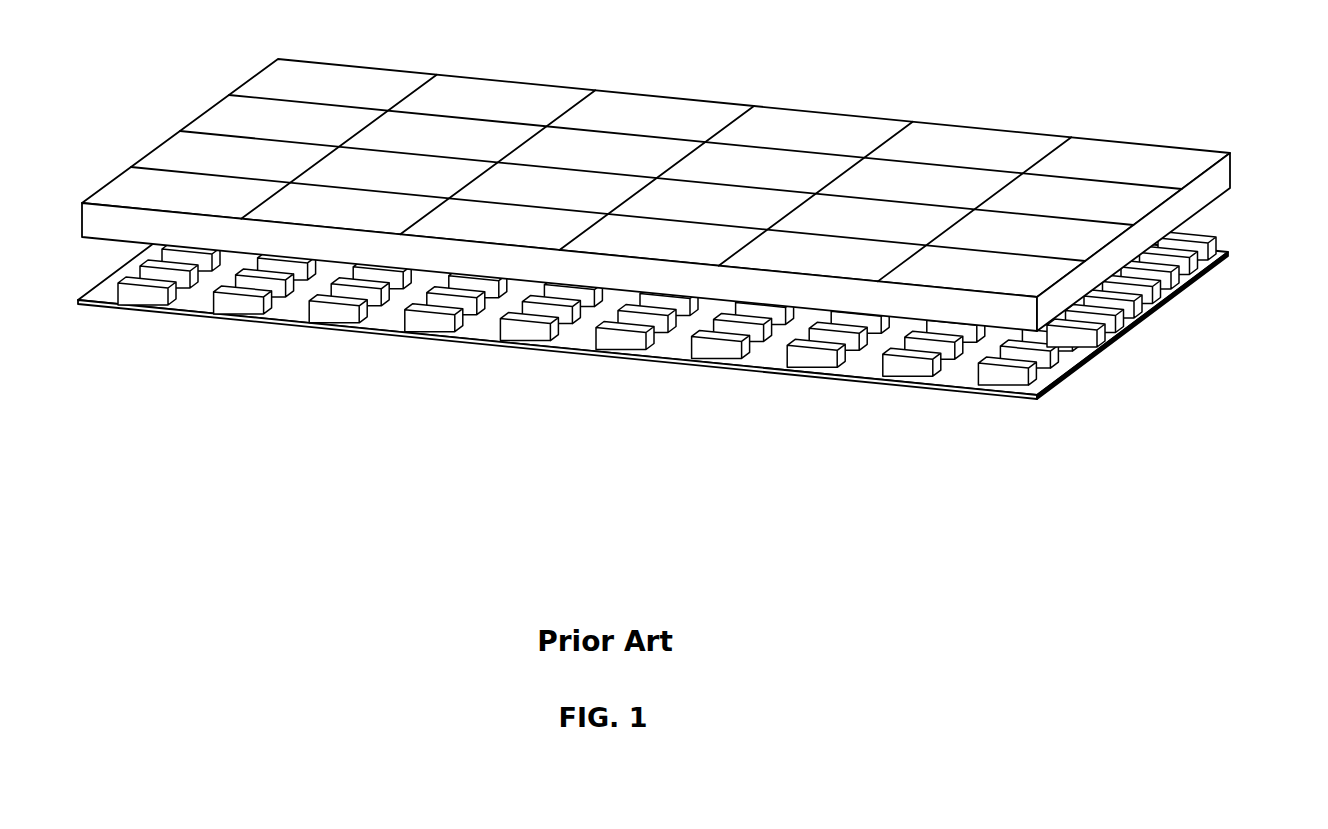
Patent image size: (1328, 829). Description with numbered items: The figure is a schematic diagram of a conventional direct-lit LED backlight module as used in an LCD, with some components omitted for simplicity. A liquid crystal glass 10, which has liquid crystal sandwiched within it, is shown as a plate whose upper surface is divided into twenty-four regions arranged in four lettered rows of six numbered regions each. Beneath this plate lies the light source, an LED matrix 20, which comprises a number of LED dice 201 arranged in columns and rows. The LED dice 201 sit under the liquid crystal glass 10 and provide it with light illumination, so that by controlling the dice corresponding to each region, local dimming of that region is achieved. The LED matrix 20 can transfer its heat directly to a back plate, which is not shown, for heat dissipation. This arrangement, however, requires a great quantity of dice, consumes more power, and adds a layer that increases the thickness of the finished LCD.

The liquid crystal glass 10 is at (1232, 152).
The LED matrix 20 is at (1087, 360).
The LED dice 201 is at (1005, 372).